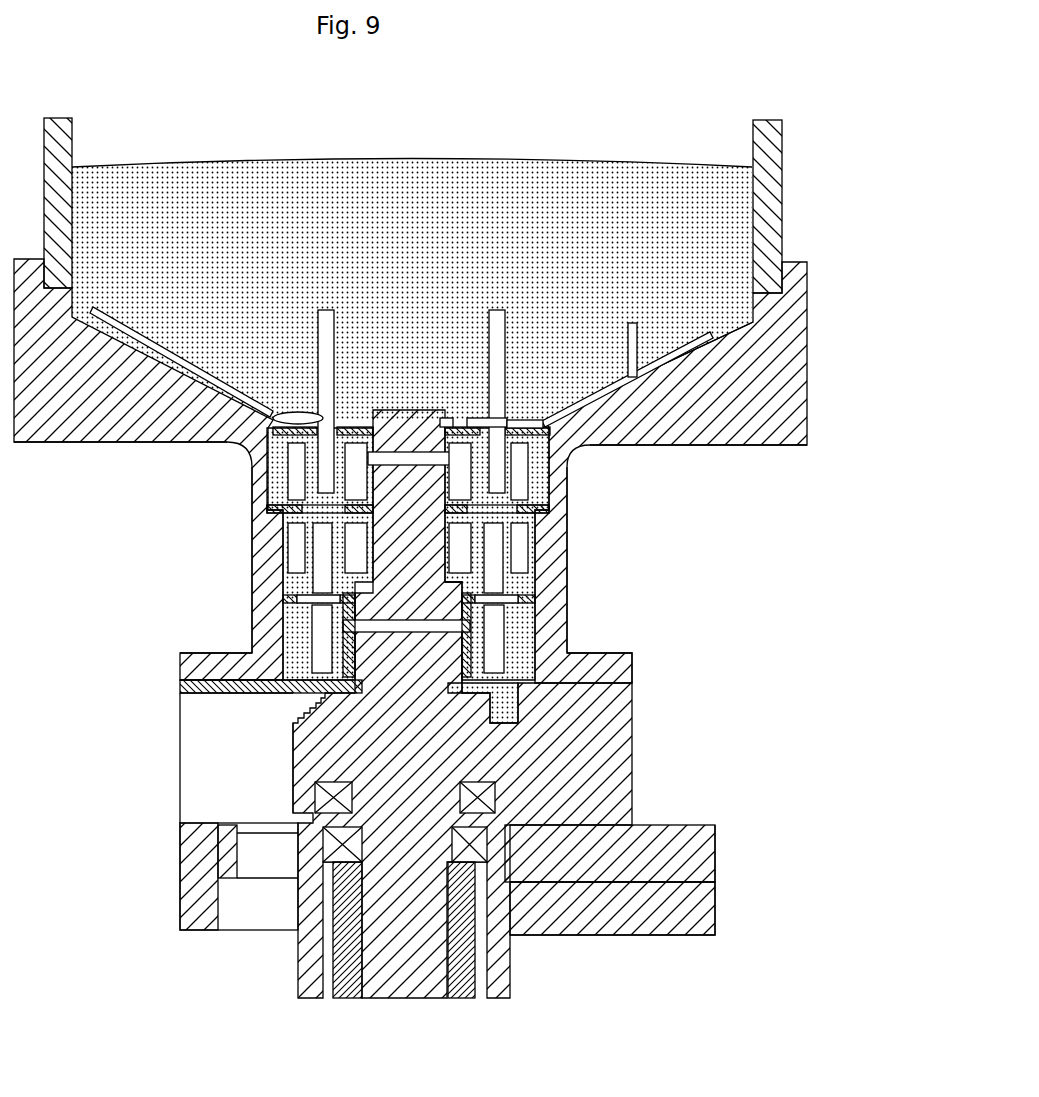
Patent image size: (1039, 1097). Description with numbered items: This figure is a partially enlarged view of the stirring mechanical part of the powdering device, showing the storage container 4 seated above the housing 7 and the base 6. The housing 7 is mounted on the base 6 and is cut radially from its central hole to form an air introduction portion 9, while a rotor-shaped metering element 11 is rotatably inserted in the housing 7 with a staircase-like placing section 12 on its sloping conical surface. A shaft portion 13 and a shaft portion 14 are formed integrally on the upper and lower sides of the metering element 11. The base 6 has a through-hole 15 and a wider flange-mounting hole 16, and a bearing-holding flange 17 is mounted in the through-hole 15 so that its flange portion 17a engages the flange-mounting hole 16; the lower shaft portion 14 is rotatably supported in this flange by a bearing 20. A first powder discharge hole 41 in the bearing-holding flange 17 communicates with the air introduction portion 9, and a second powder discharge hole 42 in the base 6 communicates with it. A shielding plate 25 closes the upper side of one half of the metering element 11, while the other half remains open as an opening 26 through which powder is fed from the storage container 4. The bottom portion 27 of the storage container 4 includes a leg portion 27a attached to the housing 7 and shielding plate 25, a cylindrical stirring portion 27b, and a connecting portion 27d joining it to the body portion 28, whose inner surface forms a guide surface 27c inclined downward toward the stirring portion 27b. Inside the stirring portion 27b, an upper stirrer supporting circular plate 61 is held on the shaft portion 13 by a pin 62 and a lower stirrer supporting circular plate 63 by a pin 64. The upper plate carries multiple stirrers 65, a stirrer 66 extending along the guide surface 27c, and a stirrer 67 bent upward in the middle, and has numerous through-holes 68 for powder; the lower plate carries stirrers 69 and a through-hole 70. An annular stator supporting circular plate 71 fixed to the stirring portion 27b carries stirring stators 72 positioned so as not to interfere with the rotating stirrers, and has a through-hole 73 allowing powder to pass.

The storage container 4 is at (815, 318).
The base 6 is at (710, 936).
The housing 7 is at (632, 765).
The air introduction portion 9 is at (200, 748).
The metering element 11 is at (278, 785).
The placing section 12 is at (530, 712).
The shaft portion 13 is at (490, 550).
The shaft portion 14 is at (380, 968).
The through-hole 15 is at (497, 895).
The flange-mounting hole 16 is at (582, 850).
The bearing-holding flange 17 is at (570, 852).
The flange portion 17a is at (565, 873).
The bearing 20 is at (488, 855).
The shielding plate 25 is at (180, 688).
The opening 26 is at (520, 688).
The bottom portion 27 is at (807, 412).
The leg portion 27a is at (633, 664).
The stirring portion 27b is at (567, 580).
The guide surface 27c is at (686, 343).
The connecting portion 27d is at (770, 446).
The body portion 28 is at (782, 165).
The first powder discharge hole 41 is at (248, 853).
The second powder discharge hole 42 is at (250, 905).
The upper stirrer supporting circular plate 61 is at (632, 380).
The pin 62 is at (500, 490).
The lower stirrer supporting circular plate 63 is at (478, 600).
The pin 64 is at (348, 640).
The stirrers 65 is at (326, 310).
The stirrer 66 is at (137, 342).
The stirrer 67 is at (620, 387).
The through-holes 68 is at (282, 421).
The stirrers 69 is at (320, 584).
The through-hole 70 is at (290, 600).
The stator supporting circular plate 71 is at (540, 510).
The stirring stators 72 is at (297, 527).
The through-hole 73 is at (295, 433).